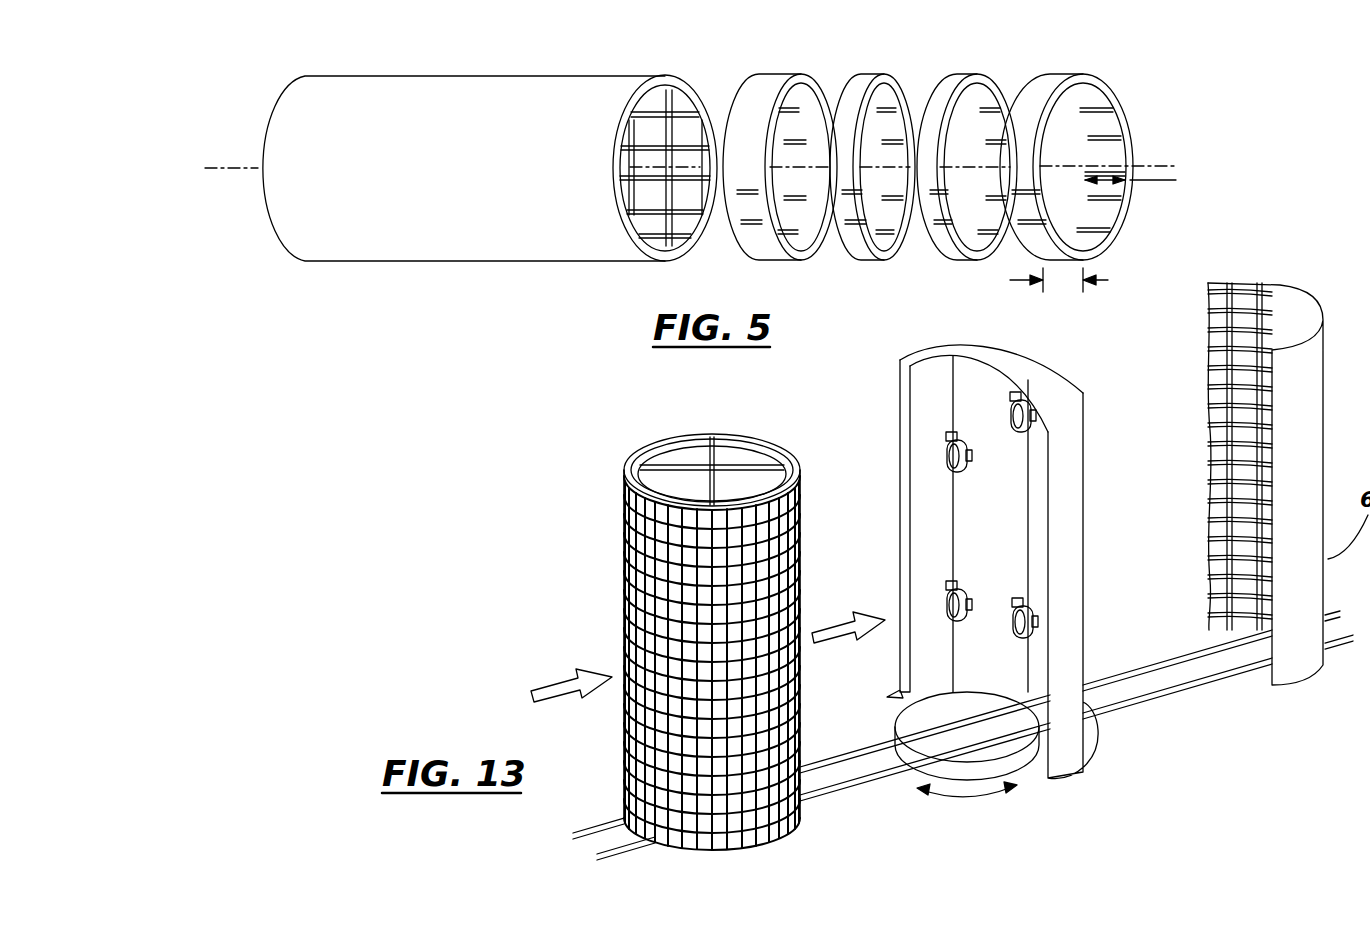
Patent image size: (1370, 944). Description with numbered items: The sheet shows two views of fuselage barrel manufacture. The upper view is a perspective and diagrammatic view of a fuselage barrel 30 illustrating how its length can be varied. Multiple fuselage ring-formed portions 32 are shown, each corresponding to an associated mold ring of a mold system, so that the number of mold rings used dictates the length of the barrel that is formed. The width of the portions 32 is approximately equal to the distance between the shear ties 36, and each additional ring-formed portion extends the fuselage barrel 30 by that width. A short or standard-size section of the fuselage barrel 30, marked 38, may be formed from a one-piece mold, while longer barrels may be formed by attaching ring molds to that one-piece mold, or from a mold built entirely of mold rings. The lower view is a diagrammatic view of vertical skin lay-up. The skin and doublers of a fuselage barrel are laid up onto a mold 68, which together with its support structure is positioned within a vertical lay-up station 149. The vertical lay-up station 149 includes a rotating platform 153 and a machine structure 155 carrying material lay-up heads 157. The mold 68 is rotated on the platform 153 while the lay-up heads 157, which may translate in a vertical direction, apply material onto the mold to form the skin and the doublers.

In FIG. 5, the fuselage barrel 30 is at (970, 169).
In FIG. 5, the fuselage ring-formed portions 32 is at (890, 74).
In FIG. 5, the shear ties 36 is at (1132, 155).
In FIG. 5, the section of the fuselage barrel 38 is at (470, 262).
In FIG. 13, the mold 68 is at (750, 437).
In FIG. 13, the vertical lay-up station 149 is at (1023, 591).
In FIG. 13, the rotating platform 153 is at (922, 767).
In FIG. 13, the machine structure 155 is at (1083, 580).
In FIG. 13, the material lay-up heads 157 is at (1012, 411).